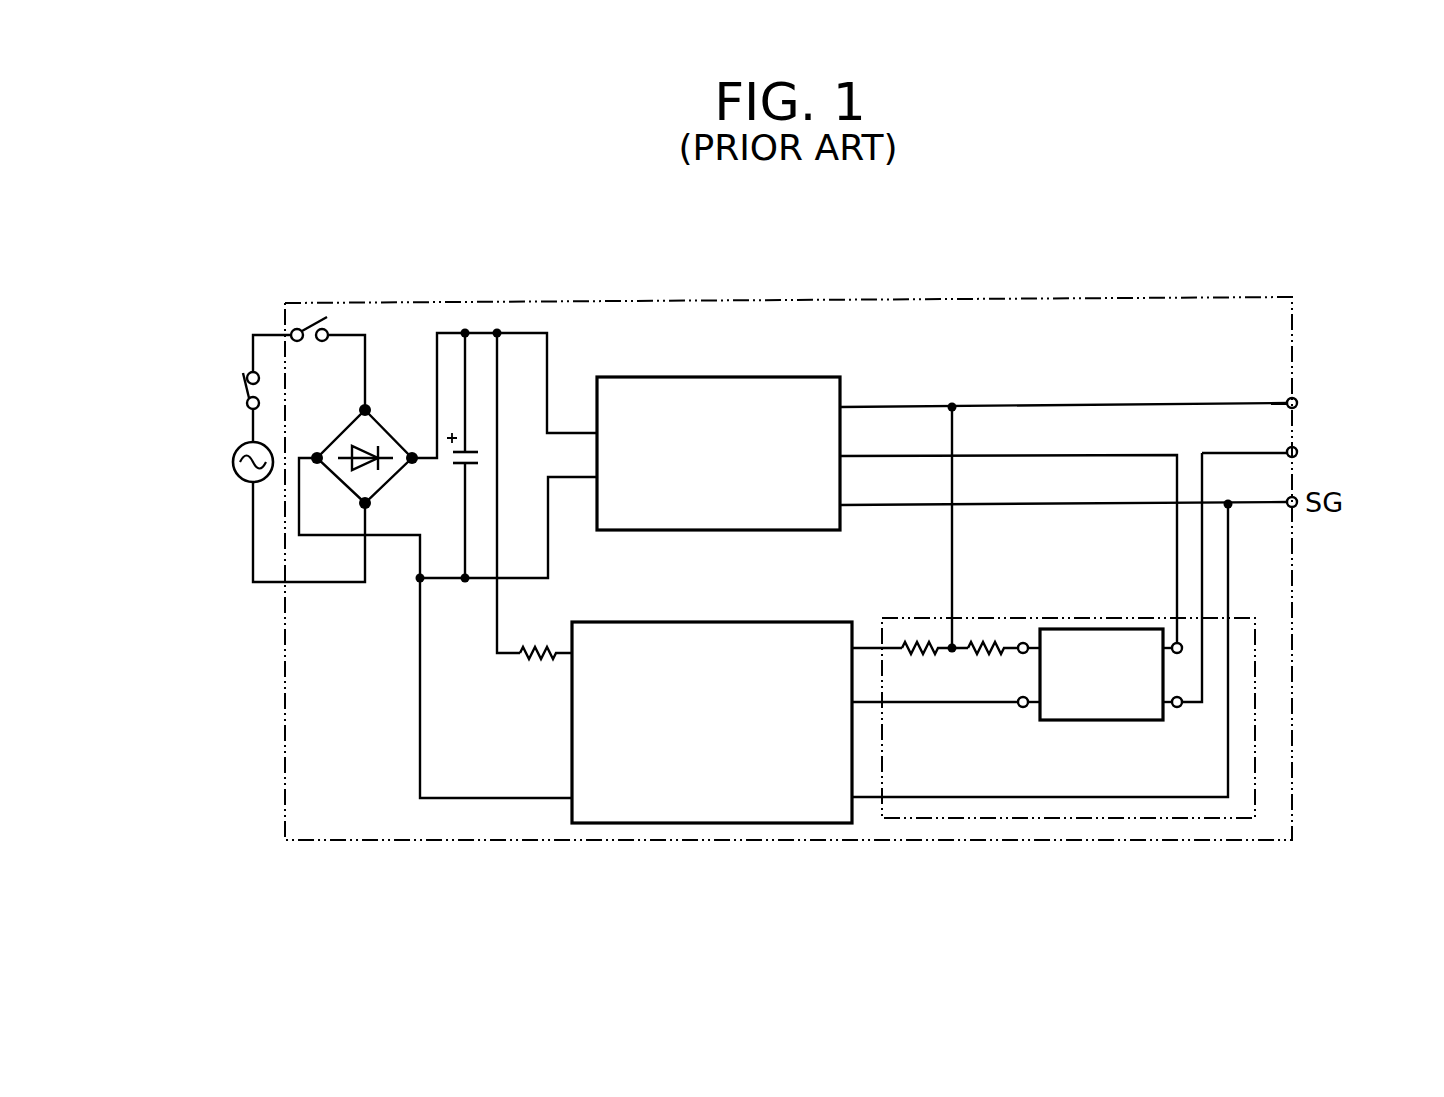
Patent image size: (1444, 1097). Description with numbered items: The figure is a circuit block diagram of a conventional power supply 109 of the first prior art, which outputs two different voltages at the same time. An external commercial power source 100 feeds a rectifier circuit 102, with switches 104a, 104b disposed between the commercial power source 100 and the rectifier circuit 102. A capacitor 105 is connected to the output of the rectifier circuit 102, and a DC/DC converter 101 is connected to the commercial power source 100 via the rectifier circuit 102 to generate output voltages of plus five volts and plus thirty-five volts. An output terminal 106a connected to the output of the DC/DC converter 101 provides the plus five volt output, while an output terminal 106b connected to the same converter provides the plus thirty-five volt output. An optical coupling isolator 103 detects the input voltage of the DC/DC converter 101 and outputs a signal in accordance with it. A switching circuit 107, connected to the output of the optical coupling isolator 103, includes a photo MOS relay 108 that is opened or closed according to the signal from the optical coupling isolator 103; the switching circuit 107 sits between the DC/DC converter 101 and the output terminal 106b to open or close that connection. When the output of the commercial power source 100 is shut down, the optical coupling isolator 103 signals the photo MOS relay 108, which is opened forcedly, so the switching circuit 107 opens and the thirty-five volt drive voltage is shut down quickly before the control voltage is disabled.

The commercial power source 100 is at (233, 462).
The DC/DC converter 101 is at (807, 377).
The rectifier circuit 102 is at (397, 408).
The optical coupling isolator 103 is at (830, 622).
The switch 104a is at (246, 392).
The switch 104b is at (317, 323).
The capacitor 105 is at (477, 445).
The output terminal 106a is at (1299, 403).
The output terminal 106b is at (1299, 452).
The switching circuit 107 is at (925, 617).
The photo MOS relay 108 is at (1137, 722).
The power supply 109 is at (1172, 297).